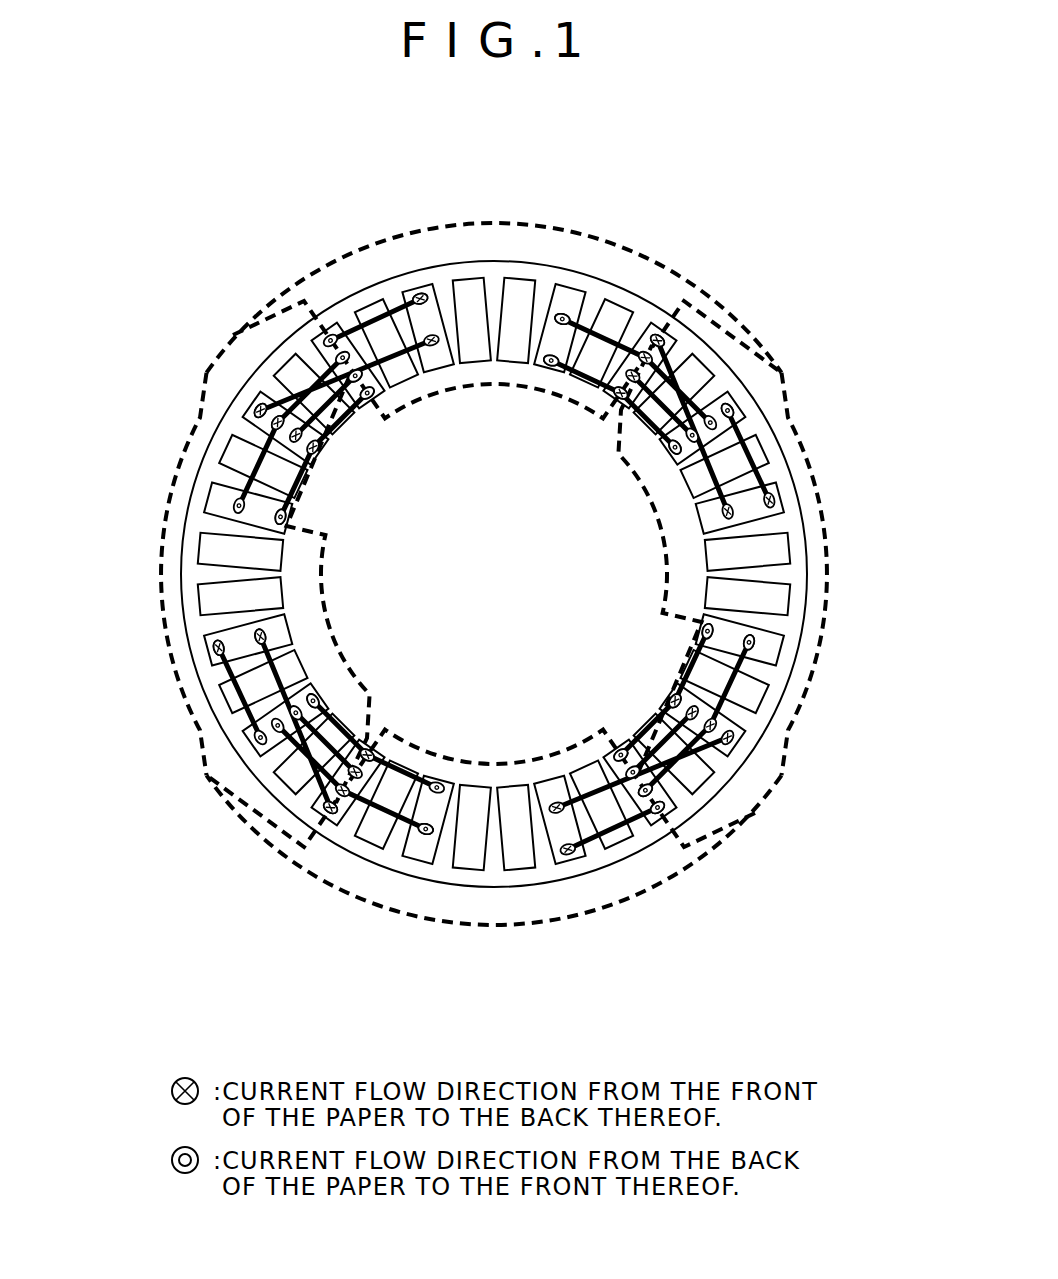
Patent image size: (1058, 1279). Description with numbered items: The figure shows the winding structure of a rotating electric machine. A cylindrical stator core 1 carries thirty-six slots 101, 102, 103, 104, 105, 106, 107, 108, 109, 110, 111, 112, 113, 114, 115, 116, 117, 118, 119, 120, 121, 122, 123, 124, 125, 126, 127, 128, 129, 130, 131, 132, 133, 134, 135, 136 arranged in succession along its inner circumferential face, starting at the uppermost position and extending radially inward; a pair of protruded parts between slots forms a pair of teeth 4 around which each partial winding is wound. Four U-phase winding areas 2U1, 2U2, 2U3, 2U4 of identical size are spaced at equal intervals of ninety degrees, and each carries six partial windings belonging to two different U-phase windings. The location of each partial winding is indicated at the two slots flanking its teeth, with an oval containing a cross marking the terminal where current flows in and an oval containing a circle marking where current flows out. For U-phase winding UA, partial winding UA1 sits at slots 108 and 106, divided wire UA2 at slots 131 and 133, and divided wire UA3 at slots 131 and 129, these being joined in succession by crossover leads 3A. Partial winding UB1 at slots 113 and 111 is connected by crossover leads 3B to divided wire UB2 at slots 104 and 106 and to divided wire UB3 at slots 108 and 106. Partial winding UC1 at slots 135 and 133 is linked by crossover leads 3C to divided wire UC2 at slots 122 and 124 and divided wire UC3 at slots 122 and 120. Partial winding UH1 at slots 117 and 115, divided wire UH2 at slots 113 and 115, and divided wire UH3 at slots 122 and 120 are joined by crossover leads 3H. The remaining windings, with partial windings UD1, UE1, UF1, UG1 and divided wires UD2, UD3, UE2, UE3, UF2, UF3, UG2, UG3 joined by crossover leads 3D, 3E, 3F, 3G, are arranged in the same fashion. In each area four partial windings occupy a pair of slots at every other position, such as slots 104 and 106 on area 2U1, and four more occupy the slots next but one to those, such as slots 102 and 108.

The stator core 1 is at (501, 262).
The crossover lead 3A is at (481, 223).
The crossover lead 3B is at (658, 540).
The crossover lead 3C is at (163, 512).
The crossover lead 3D is at (516, 386).
The crossover lead 3E is at (500, 921).
The crossover lead 3F is at (323, 592).
The crossover lead 3G is at (828, 512).
The crossover lead 3H is at (500, 760).
The pair of teeth 4 is at (457, 362).
The slot 101 is at (519, 289).
The slot 102 is at (568, 298).
The slot 103 is at (615, 315).
The slot 104 is at (658, 340).
The slot 105 is at (696, 372).
The slot 106 is at (728, 410).
The slot 107 is at (753, 453).
The slot 108 is at (770, 500).
The slot 109 is at (779, 549).
The slot 110 is at (779, 599).
The slot 111 is at (770, 648).
The slot 112 is at (753, 695).
The slot 113 is at (728, 738).
The slot 114 is at (696, 776).
The slot 115 is at (658, 808).
The slot 116 is at (615, 833).
The slot 117 is at (568, 850).
The slot 118 is at (519, 859).
The slot 119 is at (469, 859).
The slot 120 is at (420, 850).
The slot 121 is at (373, 833).
The slot 122 is at (330, 808).
The slot 123 is at (292, 776).
The slot 124 is at (260, 738).
The slot 125 is at (235, 695).
The slot 126 is at (218, 648).
The slot 127 is at (209, 599).
The slot 128 is at (209, 549).
The slot 129 is at (218, 500).
The slot 130 is at (235, 453).
The slot 131 is at (260, 410).
The slot 132 is at (292, 372).
The slot 133 is at (330, 340).
The slot 134 is at (373, 315).
The slot 135 is at (420, 298).
The slot 136 is at (469, 289).
The U-phase winding area 2U1 is at (603, 426).
The U-phase winding area 2U2 is at (620, 717).
The U-phase winding area 2U3 is at (355, 700).
The U-phase winding area 2U4 is at (354, 461).
The partial winding UA1 is at (735, 408).
The divided wire UA2 is at (256, 404).
The divided wire UA3 is at (270, 421).
The partial winding UB1 is at (699, 631).
The divided wire UB2 is at (619, 400).
The divided wire UB3 is at (670, 452).
The partial winding UC1 is at (412, 294).
The divided wire UC2 is at (322, 808).
The divided wire UC3 is at (421, 834).
The partial winding UD1 is at (373, 398).
The divided wire UD2 is at (359, 383).
The divided wire UD3 is at (552, 368).
The partial winding UE1 is at (214, 652).
The divided wire UE2 is at (666, 808).
The divided wire UE3 is at (756, 646).
The partial winding UF1 is at (289, 517).
The divided wire UF2 is at (368, 748).
The divided wire UF3 is at (268, 637).
The partial winding UG1 is at (648, 797).
The divided wire UG2 is at (664, 338).
The divided wire UG3 is at (568, 314).
The partial winding UH1 is at (616, 750).
The divided wire UH2 is at (670, 696).
The divided wire UH3 is at (322, 702).